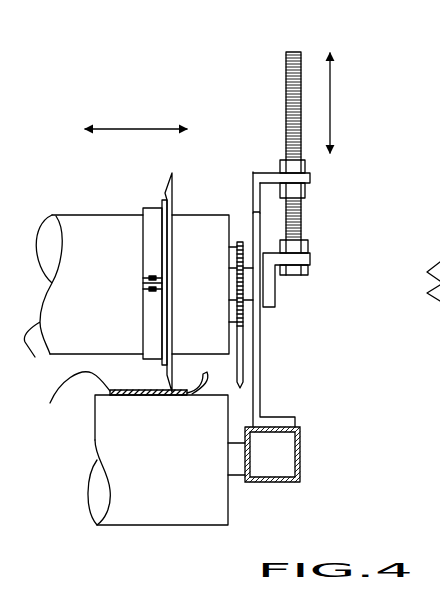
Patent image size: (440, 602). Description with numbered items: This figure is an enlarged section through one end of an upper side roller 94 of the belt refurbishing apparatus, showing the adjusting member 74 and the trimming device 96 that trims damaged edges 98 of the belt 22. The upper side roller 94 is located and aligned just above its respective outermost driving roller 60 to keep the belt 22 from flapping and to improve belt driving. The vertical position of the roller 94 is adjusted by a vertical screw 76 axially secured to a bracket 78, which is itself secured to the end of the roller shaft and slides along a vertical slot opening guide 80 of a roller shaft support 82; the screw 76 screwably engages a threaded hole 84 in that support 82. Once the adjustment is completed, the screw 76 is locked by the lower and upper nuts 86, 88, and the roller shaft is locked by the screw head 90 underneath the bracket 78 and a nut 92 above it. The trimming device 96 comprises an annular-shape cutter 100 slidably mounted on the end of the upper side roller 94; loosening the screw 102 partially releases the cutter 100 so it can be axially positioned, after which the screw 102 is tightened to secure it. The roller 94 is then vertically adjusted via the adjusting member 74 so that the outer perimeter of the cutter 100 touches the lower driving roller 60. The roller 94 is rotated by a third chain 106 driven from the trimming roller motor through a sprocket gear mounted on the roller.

The belt 22 is at (66, 382).
The driving roller 60 is at (113, 525).
The adjusting member 74 is at (347, 111).
The vertical screw 76 is at (286, 110).
The bracket 78 is at (277, 297).
The vertical slot opening guide 80 is at (262, 338).
The roller shaft support 82 is at (299, 134).
The threaded hole 84 is at (312, 178).
The lower nut 86 is at (307, 194).
The upper nut 88 is at (313, 167).
The screw head 90 is at (308, 272).
The nut 92 is at (310, 243).
The upper side roller 94 is at (126, 301).
The trimming device 96 is at (164, 177).
The damaged edge 98 is at (203, 371).
The annular-shape cutter 100 is at (173, 185).
The screw 102 is at (153, 278).
The third chain 106 is at (243, 358).